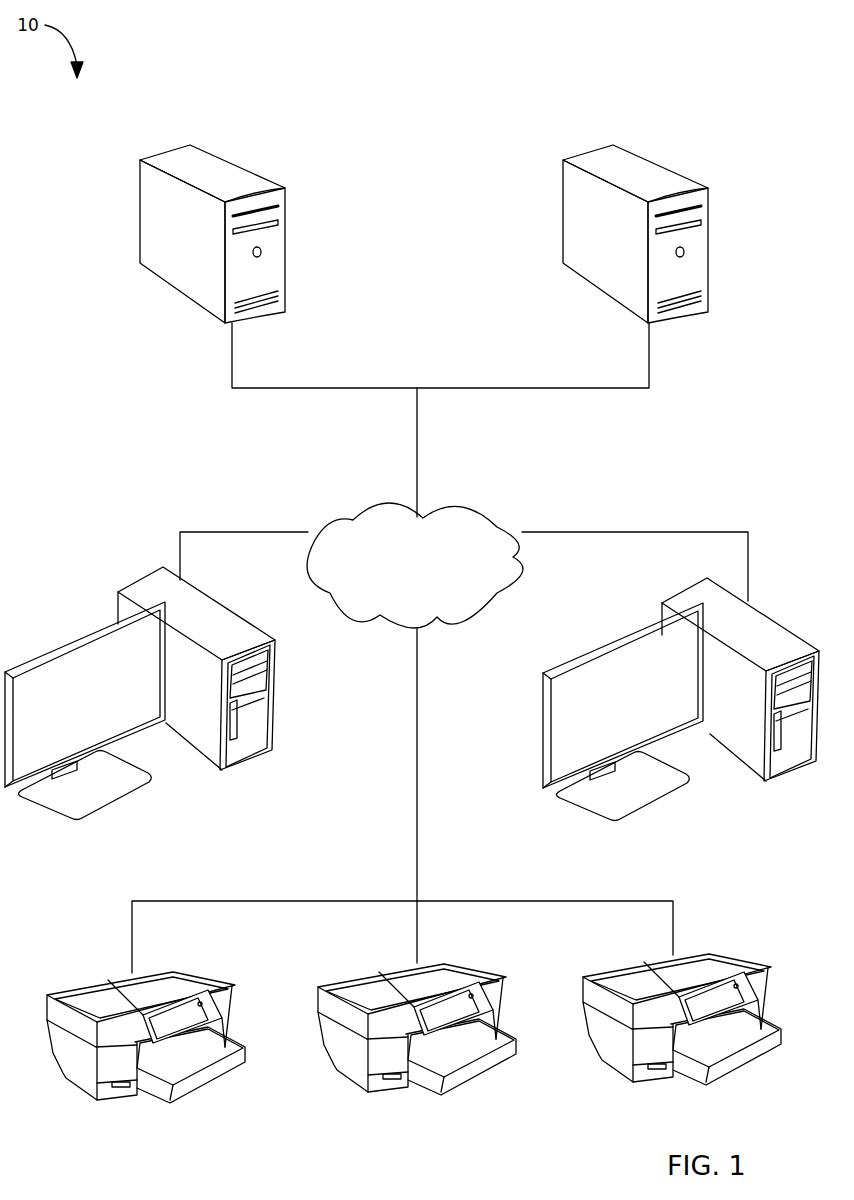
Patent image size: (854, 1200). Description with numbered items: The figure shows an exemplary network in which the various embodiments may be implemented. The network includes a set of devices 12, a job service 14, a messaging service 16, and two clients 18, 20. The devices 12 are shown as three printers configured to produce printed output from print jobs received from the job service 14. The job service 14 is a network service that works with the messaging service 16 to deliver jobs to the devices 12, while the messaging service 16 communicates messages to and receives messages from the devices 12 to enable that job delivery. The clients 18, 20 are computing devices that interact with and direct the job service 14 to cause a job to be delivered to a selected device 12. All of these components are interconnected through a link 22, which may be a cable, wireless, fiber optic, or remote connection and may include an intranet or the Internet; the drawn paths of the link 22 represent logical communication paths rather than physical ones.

The devices 12 is at (225, 998).
The job service 14 is at (232, 168).
The messaging service 16 is at (665, 173).
The client 18 is at (222, 622).
The client 20 is at (757, 625).
The link 22 is at (433, 507).